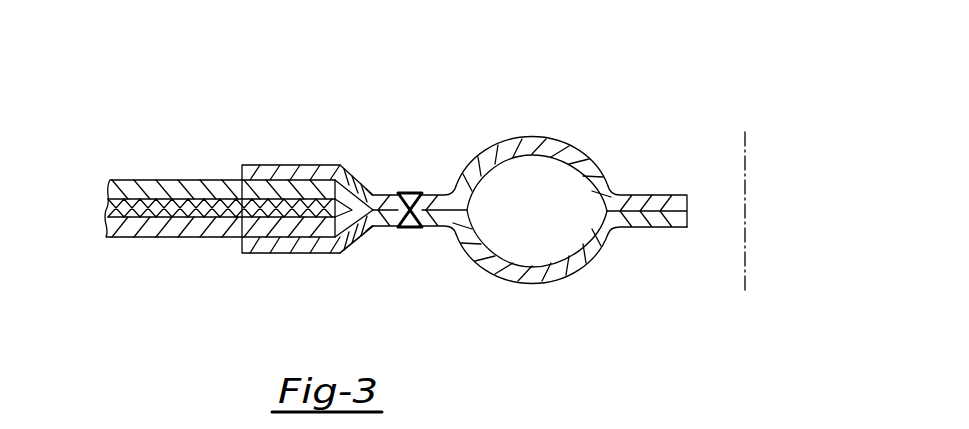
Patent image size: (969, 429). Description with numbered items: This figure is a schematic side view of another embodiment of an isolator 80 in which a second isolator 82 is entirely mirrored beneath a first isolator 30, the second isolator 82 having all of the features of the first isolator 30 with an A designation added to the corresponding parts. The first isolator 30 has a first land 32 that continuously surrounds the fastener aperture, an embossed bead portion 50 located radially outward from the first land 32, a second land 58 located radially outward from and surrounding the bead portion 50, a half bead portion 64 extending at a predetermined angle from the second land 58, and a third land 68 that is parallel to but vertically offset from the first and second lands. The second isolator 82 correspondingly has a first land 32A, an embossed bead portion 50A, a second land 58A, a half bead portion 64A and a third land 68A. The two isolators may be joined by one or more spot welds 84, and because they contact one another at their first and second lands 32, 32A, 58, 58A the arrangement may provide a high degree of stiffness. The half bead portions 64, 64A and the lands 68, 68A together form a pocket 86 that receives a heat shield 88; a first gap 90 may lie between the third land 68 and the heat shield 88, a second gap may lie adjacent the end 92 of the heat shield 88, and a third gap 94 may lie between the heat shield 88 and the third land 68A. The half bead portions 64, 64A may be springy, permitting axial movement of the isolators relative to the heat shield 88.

The heat shield 88 is at (108, 210).
The first gap 90 is at (240, 178).
The third gap 94 is at (240, 238).
The end of the heat shield 92 is at (313, 226).
The third land 68 is at (260, 165).
The third land of the second isolator 68A is at (247, 253).
The half bead portion 64 is at (355, 176).
The half bead portion of the second isolator 64A is at (366, 238).
The pocket 86 is at (366, 188).
The spot weld 84 is at (400, 192).
The isolator 80 is at (427, 118).
The second land 58 is at (433, 193).
The second land of the second isolator 58A is at (425, 227).
The embossed bead portion 50 is at (493, 142).
The embossed bead portion of the second isolator 50A is at (533, 283).
The first isolator 30 is at (567, 140).
The first land 32 is at (638, 195).
The first land of the second isolator 32A is at (638, 227).
The second isolator 82 is at (372, 283).